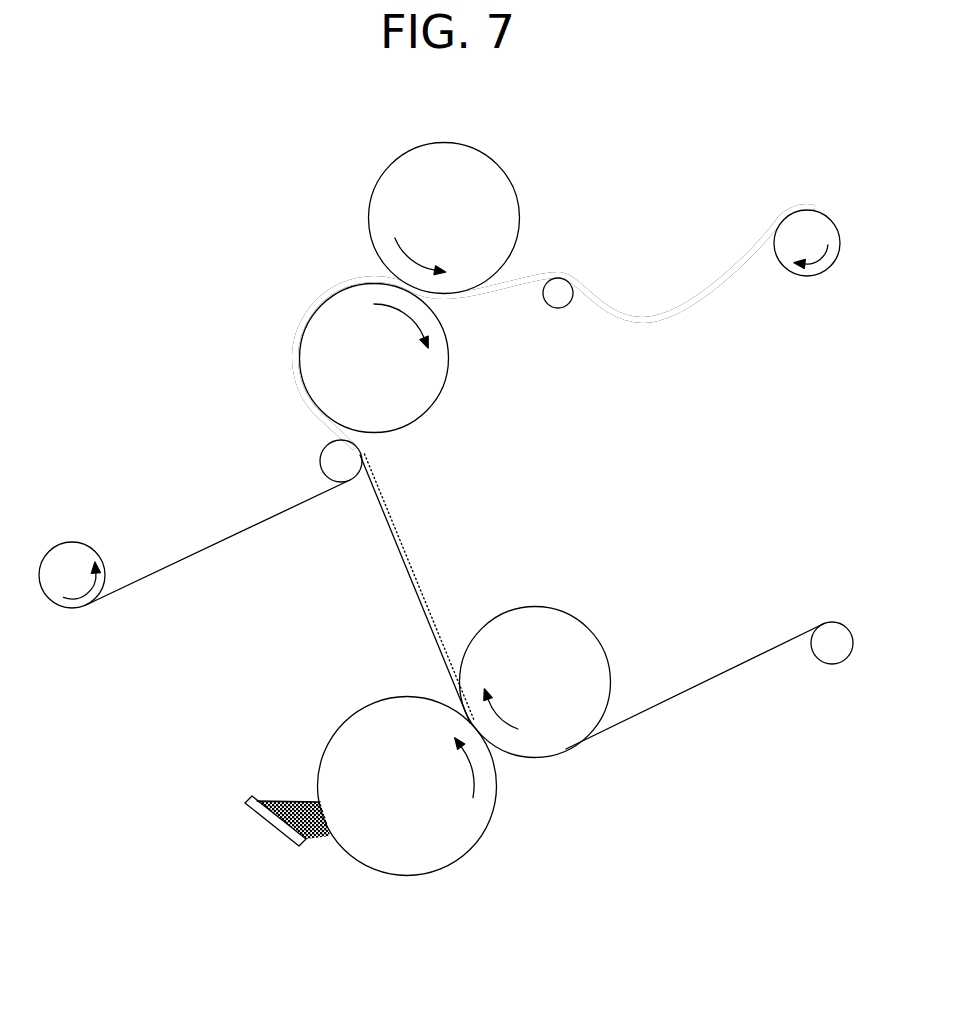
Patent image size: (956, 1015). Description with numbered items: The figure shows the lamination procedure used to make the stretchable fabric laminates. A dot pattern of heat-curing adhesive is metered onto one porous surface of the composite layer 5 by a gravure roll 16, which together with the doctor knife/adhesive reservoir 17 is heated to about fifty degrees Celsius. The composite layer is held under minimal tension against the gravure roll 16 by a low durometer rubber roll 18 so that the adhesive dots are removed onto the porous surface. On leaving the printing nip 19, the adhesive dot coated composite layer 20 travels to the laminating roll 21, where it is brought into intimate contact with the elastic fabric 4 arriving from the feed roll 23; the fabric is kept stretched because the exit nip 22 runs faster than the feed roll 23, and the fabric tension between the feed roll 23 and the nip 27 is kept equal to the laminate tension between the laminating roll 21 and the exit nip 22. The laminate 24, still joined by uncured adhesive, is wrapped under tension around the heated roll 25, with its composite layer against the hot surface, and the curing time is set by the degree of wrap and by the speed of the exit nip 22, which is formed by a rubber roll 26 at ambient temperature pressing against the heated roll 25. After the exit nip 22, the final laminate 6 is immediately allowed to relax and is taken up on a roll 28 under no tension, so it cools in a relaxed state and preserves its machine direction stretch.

The elastic fabric 4 is at (202, 553).
The composite layer 5 is at (717, 678).
The final laminate 6 is at (672, 300).
The gravure roll 16 is at (422, 802).
The doctor knife/adhesive reservoir 17 is at (272, 826).
The low durometer rubber roll 18 is at (522, 695).
The printing nip 19 is at (505, 762).
The adhesive dot coated composite layer 20 is at (409, 585).
The laminating roll 21 is at (350, 476).
The exit nip 22 is at (372, 259).
The feed roll 23 is at (55, 582).
The laminate 24 is at (299, 325).
The heated roll 25 is at (357, 372).
The rubber roll 26 is at (428, 233).
The nip 27 is at (322, 434).
The roll 28 is at (822, 252).